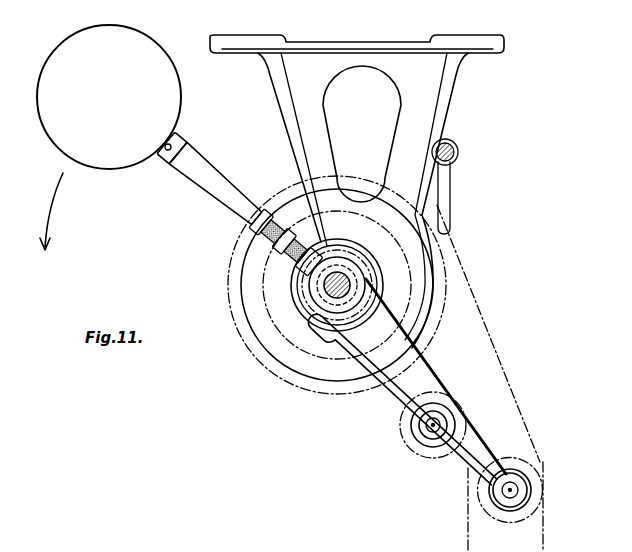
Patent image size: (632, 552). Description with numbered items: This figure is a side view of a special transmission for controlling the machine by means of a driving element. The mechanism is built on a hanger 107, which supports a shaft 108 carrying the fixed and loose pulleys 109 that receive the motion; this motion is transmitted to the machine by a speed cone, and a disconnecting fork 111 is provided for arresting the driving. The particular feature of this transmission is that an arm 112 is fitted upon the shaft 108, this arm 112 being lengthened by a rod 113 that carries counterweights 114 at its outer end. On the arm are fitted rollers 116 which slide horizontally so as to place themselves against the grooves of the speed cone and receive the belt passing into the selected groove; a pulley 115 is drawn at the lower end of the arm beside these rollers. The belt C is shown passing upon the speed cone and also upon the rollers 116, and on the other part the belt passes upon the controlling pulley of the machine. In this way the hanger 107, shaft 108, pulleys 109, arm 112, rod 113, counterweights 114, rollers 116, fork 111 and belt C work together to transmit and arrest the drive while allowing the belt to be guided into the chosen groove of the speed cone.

The counterweight 114 is at (118, 169).
The rod 113 is at (222, 178).
The hanger 107 is at (421, 104).
The disconnecting fork 111 is at (447, 203).
The shaft 108 is at (352, 284).
The fixed and loose pulleys 109 is at (265, 343).
The arm 112 is at (408, 380).
The rollers 116 is at (413, 431).
The pulley 115 is at (515, 489).
The belt C is at (479, 331).